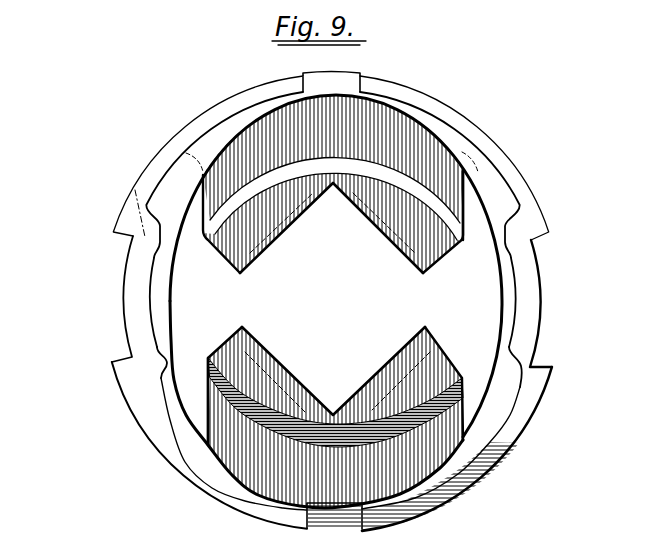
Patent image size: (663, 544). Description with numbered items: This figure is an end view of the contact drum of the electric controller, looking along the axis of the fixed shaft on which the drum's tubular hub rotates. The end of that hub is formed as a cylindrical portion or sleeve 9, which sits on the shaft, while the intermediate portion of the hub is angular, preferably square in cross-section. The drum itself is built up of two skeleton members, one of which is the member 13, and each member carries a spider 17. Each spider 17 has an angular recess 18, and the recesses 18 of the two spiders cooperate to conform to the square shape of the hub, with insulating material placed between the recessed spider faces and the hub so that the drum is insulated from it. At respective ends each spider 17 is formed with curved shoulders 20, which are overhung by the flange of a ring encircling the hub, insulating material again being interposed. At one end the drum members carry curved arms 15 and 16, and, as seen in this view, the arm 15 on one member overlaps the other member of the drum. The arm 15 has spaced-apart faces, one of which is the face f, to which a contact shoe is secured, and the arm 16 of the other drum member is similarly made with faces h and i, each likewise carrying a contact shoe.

The cylindrical portion or sleeve 9 is at (186, 473).
The skeleton member 13 is at (330, 76).
The curved arm 15 is at (150, 352).
The curved arm 16 is at (535, 347).
The spider 17 is at (416, 122).
The angular recess 18 is at (332, 299).
The curved shoulder 20 is at (455, 242).
The face f is at (156, 160).
The face h is at (456, 211).
The face i is at (515, 449).